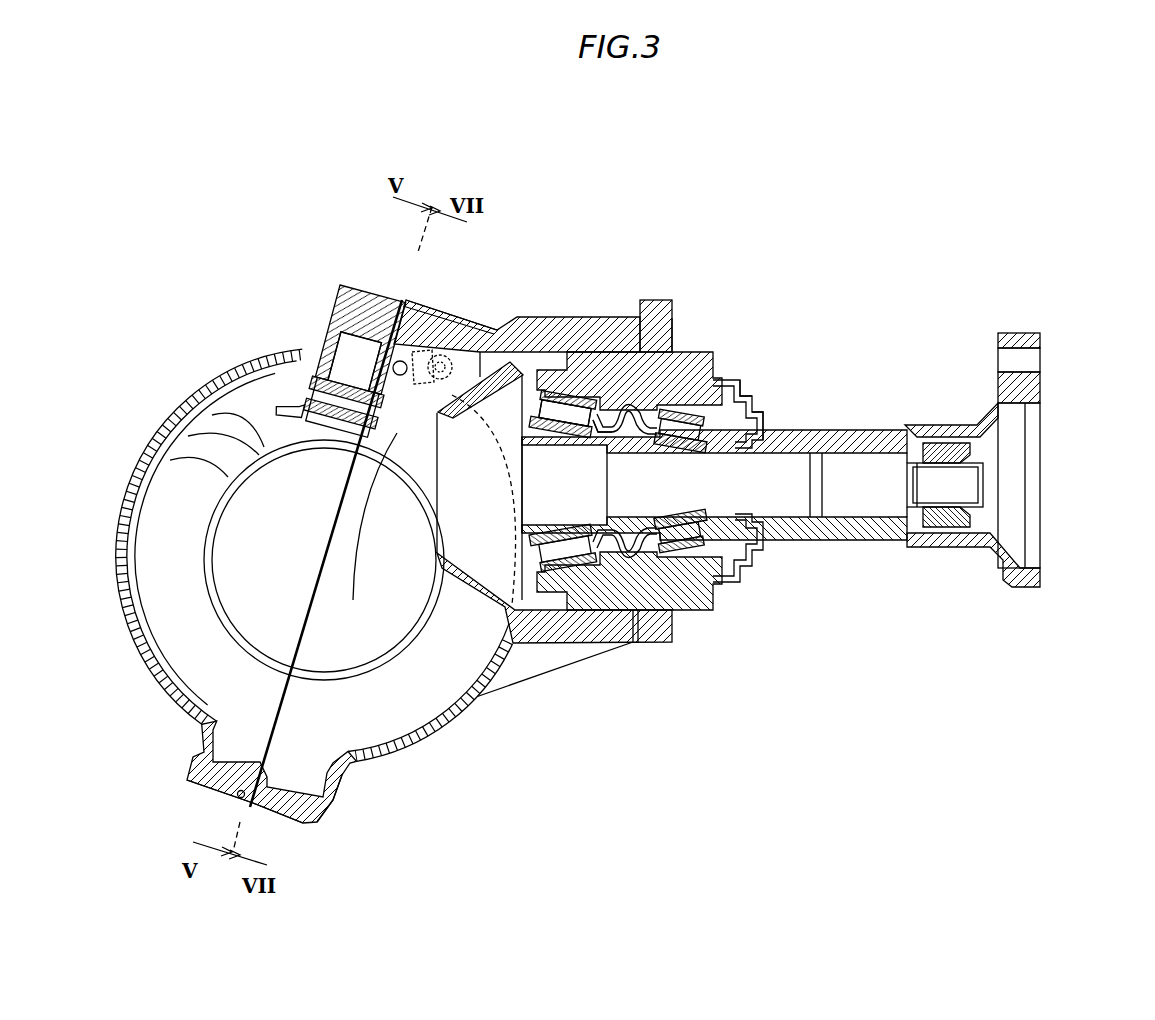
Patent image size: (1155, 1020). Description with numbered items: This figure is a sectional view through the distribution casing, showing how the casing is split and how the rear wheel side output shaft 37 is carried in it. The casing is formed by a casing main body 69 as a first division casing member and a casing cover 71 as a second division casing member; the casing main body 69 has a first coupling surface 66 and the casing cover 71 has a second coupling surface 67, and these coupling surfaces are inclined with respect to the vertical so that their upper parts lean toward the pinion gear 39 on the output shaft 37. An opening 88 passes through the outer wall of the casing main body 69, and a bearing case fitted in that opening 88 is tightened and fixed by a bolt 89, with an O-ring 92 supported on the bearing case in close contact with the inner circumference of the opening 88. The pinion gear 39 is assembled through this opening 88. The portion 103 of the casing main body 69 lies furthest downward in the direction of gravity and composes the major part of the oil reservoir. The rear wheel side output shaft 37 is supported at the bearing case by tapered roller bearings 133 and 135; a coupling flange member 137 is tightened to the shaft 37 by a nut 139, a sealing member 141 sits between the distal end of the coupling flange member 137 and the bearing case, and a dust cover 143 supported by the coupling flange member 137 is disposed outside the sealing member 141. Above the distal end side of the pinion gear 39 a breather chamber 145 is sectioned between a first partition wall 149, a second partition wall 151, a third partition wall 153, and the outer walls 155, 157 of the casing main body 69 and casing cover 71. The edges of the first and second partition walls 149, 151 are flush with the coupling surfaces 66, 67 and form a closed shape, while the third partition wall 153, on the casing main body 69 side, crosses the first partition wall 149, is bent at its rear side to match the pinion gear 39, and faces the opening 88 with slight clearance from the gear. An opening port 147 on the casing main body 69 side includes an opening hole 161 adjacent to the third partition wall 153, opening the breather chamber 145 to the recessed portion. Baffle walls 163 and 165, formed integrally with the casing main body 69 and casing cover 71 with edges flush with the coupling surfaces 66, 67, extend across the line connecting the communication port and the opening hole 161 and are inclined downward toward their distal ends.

The rear wheel side output shaft 37 is at (857, 465).
The pinion gear 39 is at (492, 332).
The first coupling surface 66 is at (253, 807).
The second coupling surface 67 is at (203, 753).
The casing main body 69 is at (537, 316).
The casing cover 71 is at (196, 388).
The opening 88 is at (597, 352).
The bolt 89 is at (664, 320).
The O-ring 92 is at (628, 314).
The portion located furthest downward 103 is at (330, 812).
The tapered roller bearing 133 is at (567, 396).
The tapered roller bearing 135 is at (722, 386).
The coupling flange member 137 is at (1040, 380).
The nut 139 is at (952, 424).
The sealing member 141 is at (735, 432).
The dust cover 143 is at (758, 378).
The breather chamber 145 is at (366, 348).
The opening port 147 is at (443, 340).
The first partition wall 149 is at (372, 418).
The second partition wall 151 is at (330, 432).
The third partition wall 153 is at (438, 382).
The outer wall 155 is at (440, 352).
The outer wall 157 is at (345, 330).
The opening hole 161 is at (405, 360).
The baffle wall 163 is at (366, 528).
The baffle wall 165 is at (333, 335).